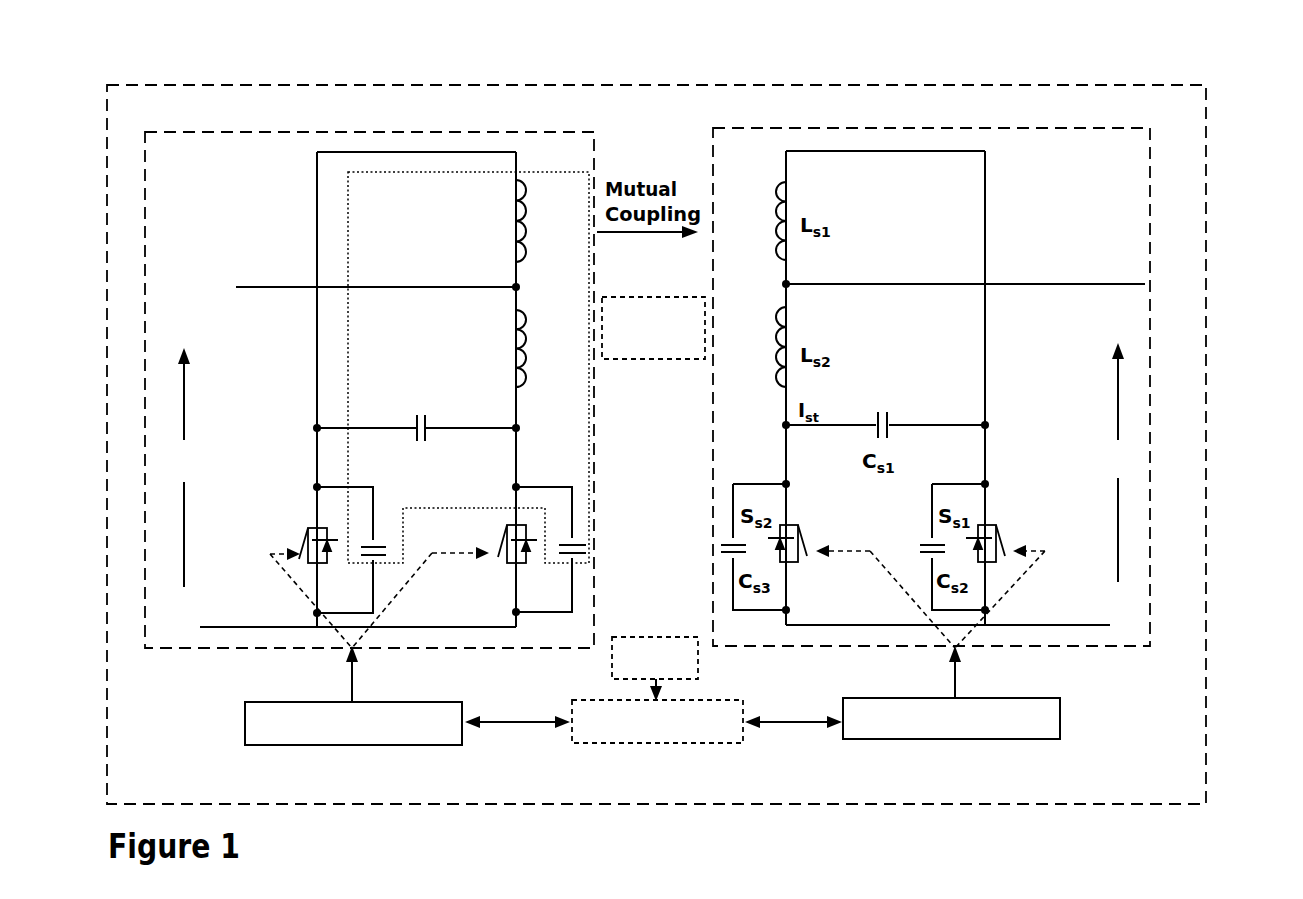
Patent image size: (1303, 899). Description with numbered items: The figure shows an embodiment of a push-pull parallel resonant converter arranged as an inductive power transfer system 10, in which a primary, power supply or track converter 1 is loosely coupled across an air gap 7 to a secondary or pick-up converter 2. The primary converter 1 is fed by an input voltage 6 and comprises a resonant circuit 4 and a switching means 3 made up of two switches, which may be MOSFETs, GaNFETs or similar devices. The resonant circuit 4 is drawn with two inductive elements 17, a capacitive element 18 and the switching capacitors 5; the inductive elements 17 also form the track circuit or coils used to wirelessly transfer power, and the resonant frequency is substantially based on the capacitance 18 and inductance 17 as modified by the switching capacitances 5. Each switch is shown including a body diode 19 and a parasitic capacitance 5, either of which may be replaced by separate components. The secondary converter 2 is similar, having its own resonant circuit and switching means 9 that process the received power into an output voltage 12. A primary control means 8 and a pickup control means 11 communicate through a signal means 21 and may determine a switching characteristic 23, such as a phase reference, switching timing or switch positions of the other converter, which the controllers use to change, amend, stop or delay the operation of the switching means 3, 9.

The primary converter 1 is at (545, 132).
The secondary converter 2 is at (1113, 128).
The switching means 3 is at (305, 532).
The resonant circuit 4 is at (348, 245).
The switching capacitors 5 is at (375, 548).
The input voltage 6 is at (163, 462).
The air gap 7 is at (676, 340).
The control means 8 is at (245, 727).
The switching means 9 is at (795, 528).
The IPT system 10 is at (1045, 85).
The control means 11 is at (1060, 718).
The output voltage 12 is at (1145, 458).
The inductive elements 17 is at (528, 192).
The capacitive element 18 is at (415, 428).
The body diode 19 is at (302, 562).
The signal means 21 is at (570, 740).
The switching characteristic 23 is at (655, 669).